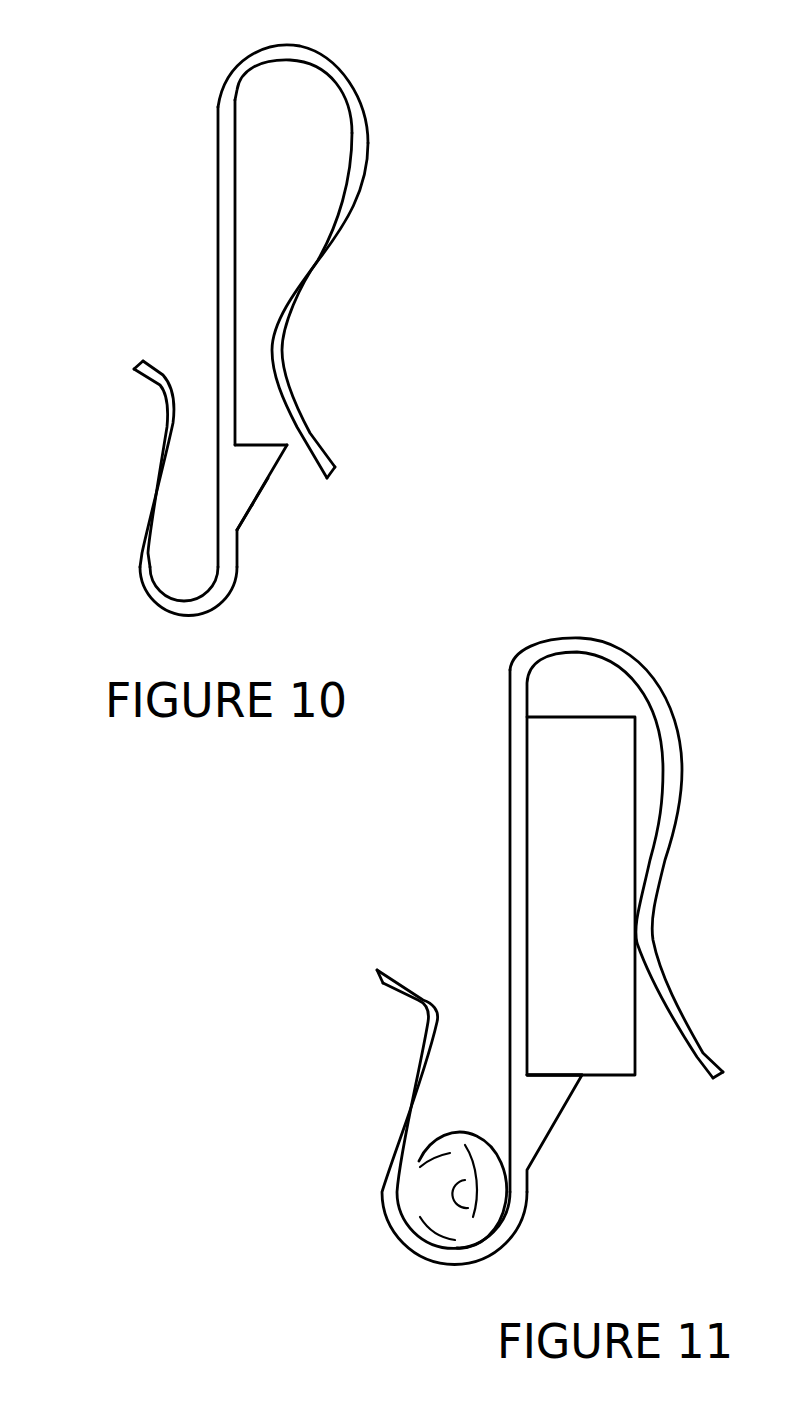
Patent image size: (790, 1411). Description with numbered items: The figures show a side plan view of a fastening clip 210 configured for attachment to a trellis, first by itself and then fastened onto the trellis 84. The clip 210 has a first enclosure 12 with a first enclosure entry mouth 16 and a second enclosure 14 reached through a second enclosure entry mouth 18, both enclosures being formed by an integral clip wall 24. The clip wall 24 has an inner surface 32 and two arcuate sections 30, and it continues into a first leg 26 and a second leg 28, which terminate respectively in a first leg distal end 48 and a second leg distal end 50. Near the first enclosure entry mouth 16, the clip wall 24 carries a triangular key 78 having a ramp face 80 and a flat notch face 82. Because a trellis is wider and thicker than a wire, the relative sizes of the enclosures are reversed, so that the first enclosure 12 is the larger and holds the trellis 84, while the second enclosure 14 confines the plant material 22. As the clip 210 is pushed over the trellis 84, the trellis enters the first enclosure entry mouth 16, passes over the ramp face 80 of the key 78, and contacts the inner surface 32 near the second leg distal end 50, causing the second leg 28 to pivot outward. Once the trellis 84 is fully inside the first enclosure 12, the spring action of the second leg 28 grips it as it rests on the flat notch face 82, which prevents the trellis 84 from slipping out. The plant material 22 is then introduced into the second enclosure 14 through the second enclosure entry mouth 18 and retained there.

In FIG. 10, the clip 210 is at (418, 93).
In FIG. 11, the clip 210 is at (424, 857).
In FIG. 10, the first enclosure 12 is at (318, 125).
In FIG. 11, the first enclosure 12 is at (607, 682).
In FIG. 10, the second enclosure 14 is at (167, 554).
In FIG. 11, the second enclosure 14 is at (473, 1088).
In FIG. 10, the first enclosure entry mouth 16 is at (299, 466).
In FIG. 10, the second enclosure entry mouth 18 is at (200, 381).
In FIG. 11, the plant material 22 is at (425, 1182).
In FIG. 10, the clip wall 24 is at (228, 222).
In FIG. 10, the first leg 26 is at (158, 480).
In FIG. 10, the second leg 28 is at (297, 295).
In FIG. 10, the arcuate sections 30 is at (270, 47).
In FIG. 10, the inner surface 32 is at (312, 218).
In FIG. 10, the first leg distal end 48 is at (138, 367).
In FIG. 10, the second leg distal end 50 is at (337, 465).
In FIG. 10, the triangular key 78 is at (241, 483).
In FIG. 10, the ramp face 80 is at (284, 493).
In FIG. 10, the flat notch face 82 is at (262, 427).
In FIG. 11, the flat notch face 82 is at (563, 1054).
In FIG. 11, the trellis 84 is at (590, 872).